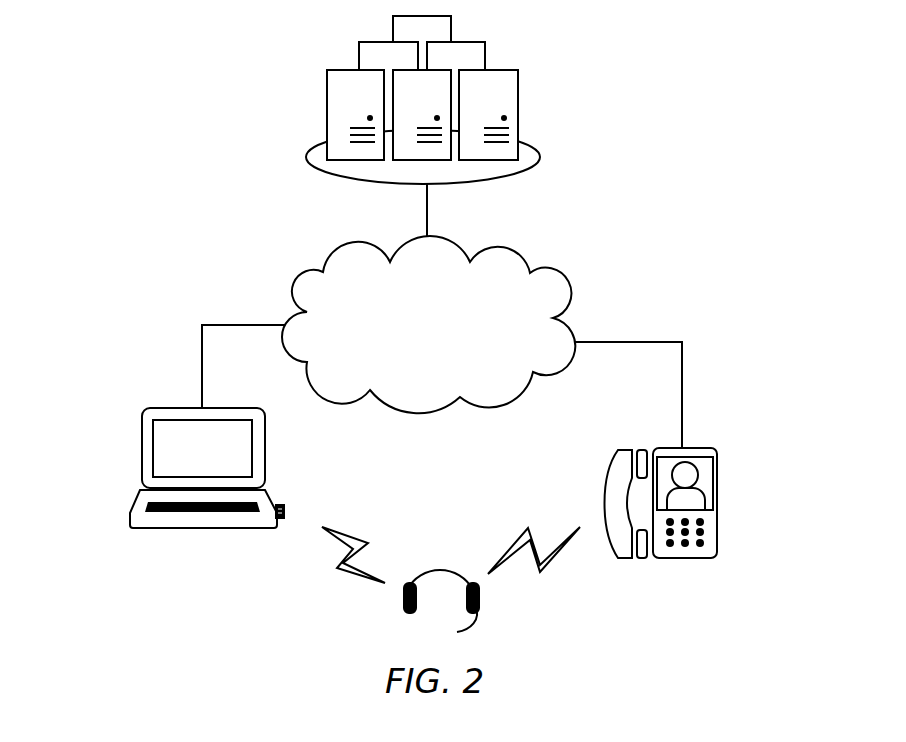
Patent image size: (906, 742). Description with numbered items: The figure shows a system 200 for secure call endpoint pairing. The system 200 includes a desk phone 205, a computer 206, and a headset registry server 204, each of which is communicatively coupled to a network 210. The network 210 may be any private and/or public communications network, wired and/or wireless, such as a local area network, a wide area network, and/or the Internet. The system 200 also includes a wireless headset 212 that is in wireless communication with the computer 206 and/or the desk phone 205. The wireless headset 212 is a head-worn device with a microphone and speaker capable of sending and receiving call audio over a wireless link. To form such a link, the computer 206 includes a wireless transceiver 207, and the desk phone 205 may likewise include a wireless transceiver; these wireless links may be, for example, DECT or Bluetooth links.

The system 200 is at (63, 118).
The headset registry server 204 is at (540, 147).
The desk phone 205 is at (717, 538).
The computer 206 is at (188, 408).
The wireless transceiver 207 is at (284, 510).
The network 210 is at (406, 352).
The wireless headset 212 is at (433, 570).